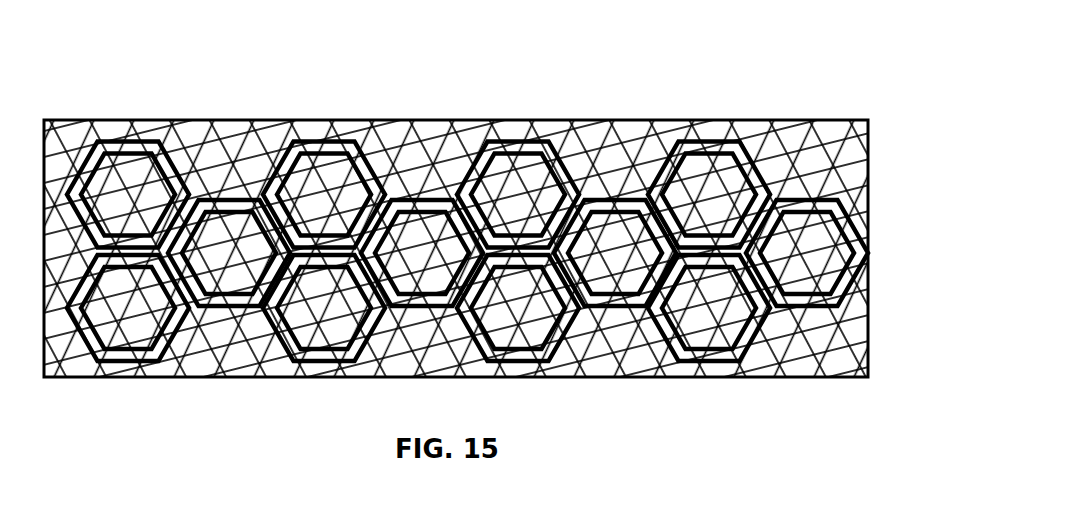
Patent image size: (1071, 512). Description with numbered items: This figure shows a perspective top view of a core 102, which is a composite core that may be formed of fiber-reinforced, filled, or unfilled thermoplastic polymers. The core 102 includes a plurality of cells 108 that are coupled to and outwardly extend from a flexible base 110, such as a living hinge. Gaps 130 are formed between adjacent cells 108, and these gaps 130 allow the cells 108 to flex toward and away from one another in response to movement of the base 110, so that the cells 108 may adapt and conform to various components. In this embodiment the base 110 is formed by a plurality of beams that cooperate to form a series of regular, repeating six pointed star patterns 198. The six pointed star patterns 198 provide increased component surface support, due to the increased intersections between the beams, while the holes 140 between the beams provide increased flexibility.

The core 102 is at (823, 92).
The cells 108 is at (708, 136).
The base 110 is at (740, 212).
The gaps 130 is at (264, 199).
The holes 140 is at (770, 205).
The six pointed star patterns 198 is at (675, 168).